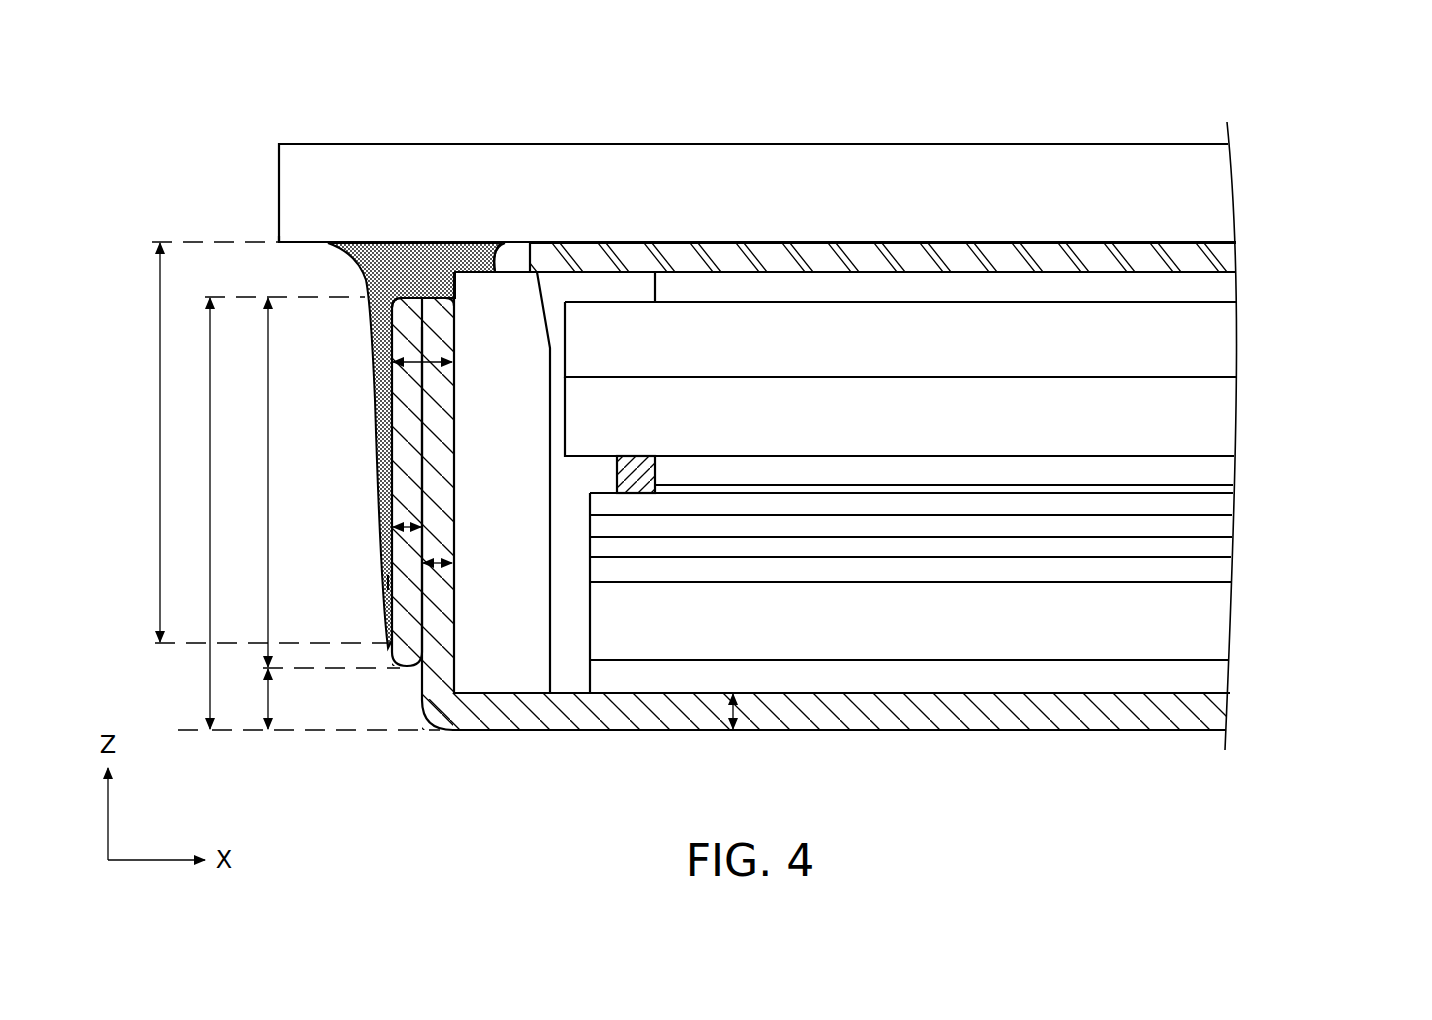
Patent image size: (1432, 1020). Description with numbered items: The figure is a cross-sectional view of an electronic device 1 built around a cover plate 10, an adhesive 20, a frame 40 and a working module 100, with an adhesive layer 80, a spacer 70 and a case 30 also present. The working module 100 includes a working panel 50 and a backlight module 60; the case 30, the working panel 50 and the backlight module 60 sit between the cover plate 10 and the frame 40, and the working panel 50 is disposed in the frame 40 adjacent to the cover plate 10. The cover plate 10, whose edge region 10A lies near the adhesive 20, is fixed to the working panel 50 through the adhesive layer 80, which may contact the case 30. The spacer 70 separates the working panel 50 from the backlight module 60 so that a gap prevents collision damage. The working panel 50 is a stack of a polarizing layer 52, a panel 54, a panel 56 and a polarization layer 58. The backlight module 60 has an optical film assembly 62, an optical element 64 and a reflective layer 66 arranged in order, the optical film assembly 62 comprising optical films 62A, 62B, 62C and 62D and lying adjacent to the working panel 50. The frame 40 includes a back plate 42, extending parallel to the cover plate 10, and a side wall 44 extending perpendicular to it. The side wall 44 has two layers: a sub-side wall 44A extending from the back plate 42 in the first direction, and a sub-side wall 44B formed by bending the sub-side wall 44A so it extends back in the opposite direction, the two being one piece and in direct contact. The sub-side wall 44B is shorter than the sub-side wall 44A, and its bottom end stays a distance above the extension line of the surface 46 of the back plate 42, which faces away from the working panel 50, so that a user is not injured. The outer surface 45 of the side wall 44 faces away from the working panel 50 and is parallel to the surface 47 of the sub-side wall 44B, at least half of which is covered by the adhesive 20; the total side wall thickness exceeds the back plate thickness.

The electronic device 1 is at (252, 108).
The cover plate 10 is at (1205, 189).
The edge of cover 10A is at (277, 249).
The adhesive 20 is at (372, 286).
The case 30 is at (487, 417).
The frame 40 is at (805, 584).
The back plate 42 is at (442, 828).
The side wall 44 is at (460, 564).
The first sub-side wall 44A is at (437, 615).
The second sub-side wall 44B is at (412, 647).
The outer surface 45 is at (417, 618).
The surface 46 is at (943, 736).
The surface 47 is at (386, 582).
The working panel 50 is at (971, 378).
The polarizing layer 52 is at (1210, 287).
The panel 54 is at (1205, 343).
The panel 56 is at (1207, 412).
The polarization layer 58 is at (994, 467).
The backlight module 60 is at (985, 589).
The optical film assembly 62 is at (961, 589).
The optical film 62A is at (1190, 502).
The optical film 62B is at (1180, 528).
The optical film 62C is at (1180, 556).
The optical film 62D is at (936, 582).
The optical element 64 is at (1167, 626).
The reflective layer 66 is at (961, 677).
The spacer 70 is at (628, 476).
The adhesive layer 80 is at (1180, 262).
The working module 100 is at (873, 482).